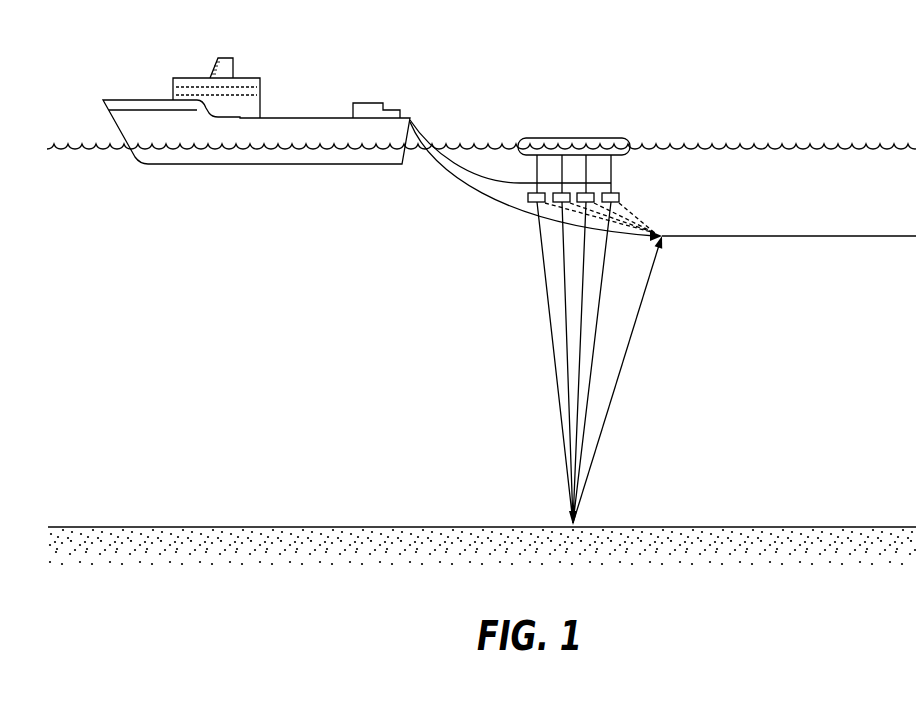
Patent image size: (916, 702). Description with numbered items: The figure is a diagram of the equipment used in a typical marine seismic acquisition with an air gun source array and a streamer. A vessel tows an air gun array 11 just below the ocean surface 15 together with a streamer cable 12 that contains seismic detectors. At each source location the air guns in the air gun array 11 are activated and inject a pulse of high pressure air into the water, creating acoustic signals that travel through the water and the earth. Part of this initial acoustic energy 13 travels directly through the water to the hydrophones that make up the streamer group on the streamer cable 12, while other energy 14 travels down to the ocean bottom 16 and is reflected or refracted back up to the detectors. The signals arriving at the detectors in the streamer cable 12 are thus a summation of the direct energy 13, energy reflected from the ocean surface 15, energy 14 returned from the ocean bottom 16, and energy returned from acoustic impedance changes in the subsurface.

The air gun array 11 is at (610, 138).
The streamer cable 12 is at (777, 236).
The direct energy 13 is at (626, 212).
The reflected energy 14 is at (613, 393).
The ocean surface 15 is at (777, 148).
The ocean bottom 16 is at (778, 527).